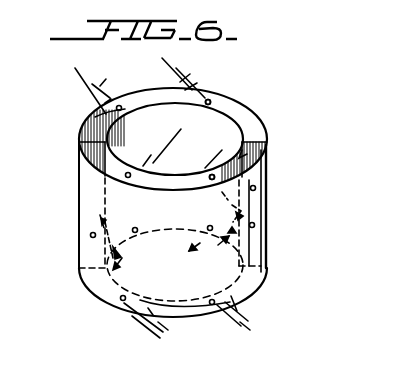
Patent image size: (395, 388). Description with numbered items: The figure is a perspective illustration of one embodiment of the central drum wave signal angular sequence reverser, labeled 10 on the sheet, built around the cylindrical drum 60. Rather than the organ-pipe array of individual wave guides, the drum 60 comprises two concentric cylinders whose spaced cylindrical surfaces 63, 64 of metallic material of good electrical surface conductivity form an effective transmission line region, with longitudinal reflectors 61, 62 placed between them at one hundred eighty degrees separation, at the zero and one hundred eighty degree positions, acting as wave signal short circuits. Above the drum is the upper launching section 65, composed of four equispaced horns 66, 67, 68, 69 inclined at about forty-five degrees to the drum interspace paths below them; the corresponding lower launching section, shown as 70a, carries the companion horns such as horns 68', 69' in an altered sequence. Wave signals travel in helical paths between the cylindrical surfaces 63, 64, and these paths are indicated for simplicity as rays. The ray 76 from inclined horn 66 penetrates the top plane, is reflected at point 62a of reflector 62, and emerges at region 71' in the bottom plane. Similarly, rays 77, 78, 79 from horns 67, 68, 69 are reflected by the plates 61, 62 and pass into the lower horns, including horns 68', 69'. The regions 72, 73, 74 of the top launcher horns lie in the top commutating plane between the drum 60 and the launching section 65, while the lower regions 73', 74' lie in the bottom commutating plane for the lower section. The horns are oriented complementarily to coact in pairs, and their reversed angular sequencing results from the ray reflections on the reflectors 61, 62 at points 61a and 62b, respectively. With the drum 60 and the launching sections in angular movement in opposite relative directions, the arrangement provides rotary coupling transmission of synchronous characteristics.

The apparatus 10 is at (393, 6).
The drum 60 is at (179, 223).
The reflector 61 is at (88, 153).
The reflection point 61a is at (90, 234).
The reflector 62 is at (268, 153).
The reflection point 62a is at (255, 226).
The reflection point 62b is at (256, 189).
The cylindrical surface 63 is at (105, 128).
The cylindrical surface 64 is at (244, 107).
The upper launching section 65 is at (251, 140).
The horn 66 is at (107, 90).
The horn 67 is at (195, 86).
The horn 68 is at (204, 161).
The horn 68' is at (133, 336).
The horn 69 is at (137, 147).
The horn 69' is at (230, 336).
The housing assembly 70a is at (216, 346).
The region 71' is at (204, 214).
The region 72 is at (208, 105).
The region 73 is at (191, 168).
The region 73' is at (101, 319).
The region 74 is at (139, 190).
The region 74' is at (201, 287).
The ray 76 is at (191, 244).
The ray 77 is at (129, 240).
The ray 78 is at (156, 329).
The ray 79 is at (243, 327).